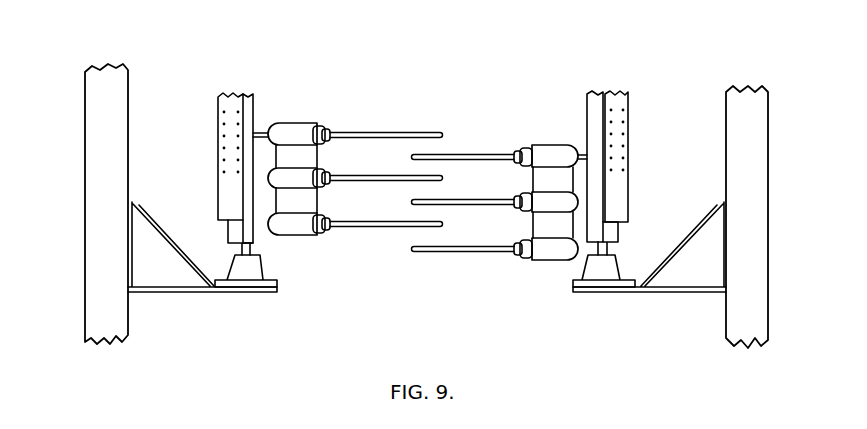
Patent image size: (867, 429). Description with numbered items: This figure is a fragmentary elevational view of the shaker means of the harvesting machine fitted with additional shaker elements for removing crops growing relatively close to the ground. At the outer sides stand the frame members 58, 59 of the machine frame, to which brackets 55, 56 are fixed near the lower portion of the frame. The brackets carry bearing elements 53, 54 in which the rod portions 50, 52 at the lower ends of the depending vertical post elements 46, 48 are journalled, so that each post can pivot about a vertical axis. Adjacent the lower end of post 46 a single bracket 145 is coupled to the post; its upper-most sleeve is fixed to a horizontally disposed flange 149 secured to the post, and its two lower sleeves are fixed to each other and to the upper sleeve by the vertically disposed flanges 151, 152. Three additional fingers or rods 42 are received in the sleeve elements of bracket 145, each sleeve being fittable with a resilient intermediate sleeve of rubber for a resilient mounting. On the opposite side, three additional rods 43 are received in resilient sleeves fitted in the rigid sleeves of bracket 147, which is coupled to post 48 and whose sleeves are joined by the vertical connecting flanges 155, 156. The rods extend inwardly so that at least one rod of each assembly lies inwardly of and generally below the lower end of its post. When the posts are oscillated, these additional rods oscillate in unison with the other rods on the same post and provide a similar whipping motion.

The frame member 58 is at (105, 107).
The frame member 59 is at (760, 110).
The bracket 55 is at (177, 293).
The bracket 56 is at (695, 293).
The vertical post element 46 is at (222, 192).
The vertical post element 48 is at (642, 118).
The rod portion 50 is at (240, 248).
The rod portion 52 is at (608, 250).
The bearing element 53 is at (267, 270).
The bearing element 54 is at (592, 267).
The horizontally disposed flange 149 is at (259, 128).
The bracket 145 is at (320, 159).
The bracket 147 is at (523, 171).
The vertically disposed flange 151 is at (305, 158).
The vertically disposed flange 152 is at (288, 200).
The vertical connecting flange 155 is at (548, 180).
The vertical connecting flange 156 is at (552, 227).
The finger or rod 42 is at (370, 130).
The finger or rod 43 is at (463, 153).